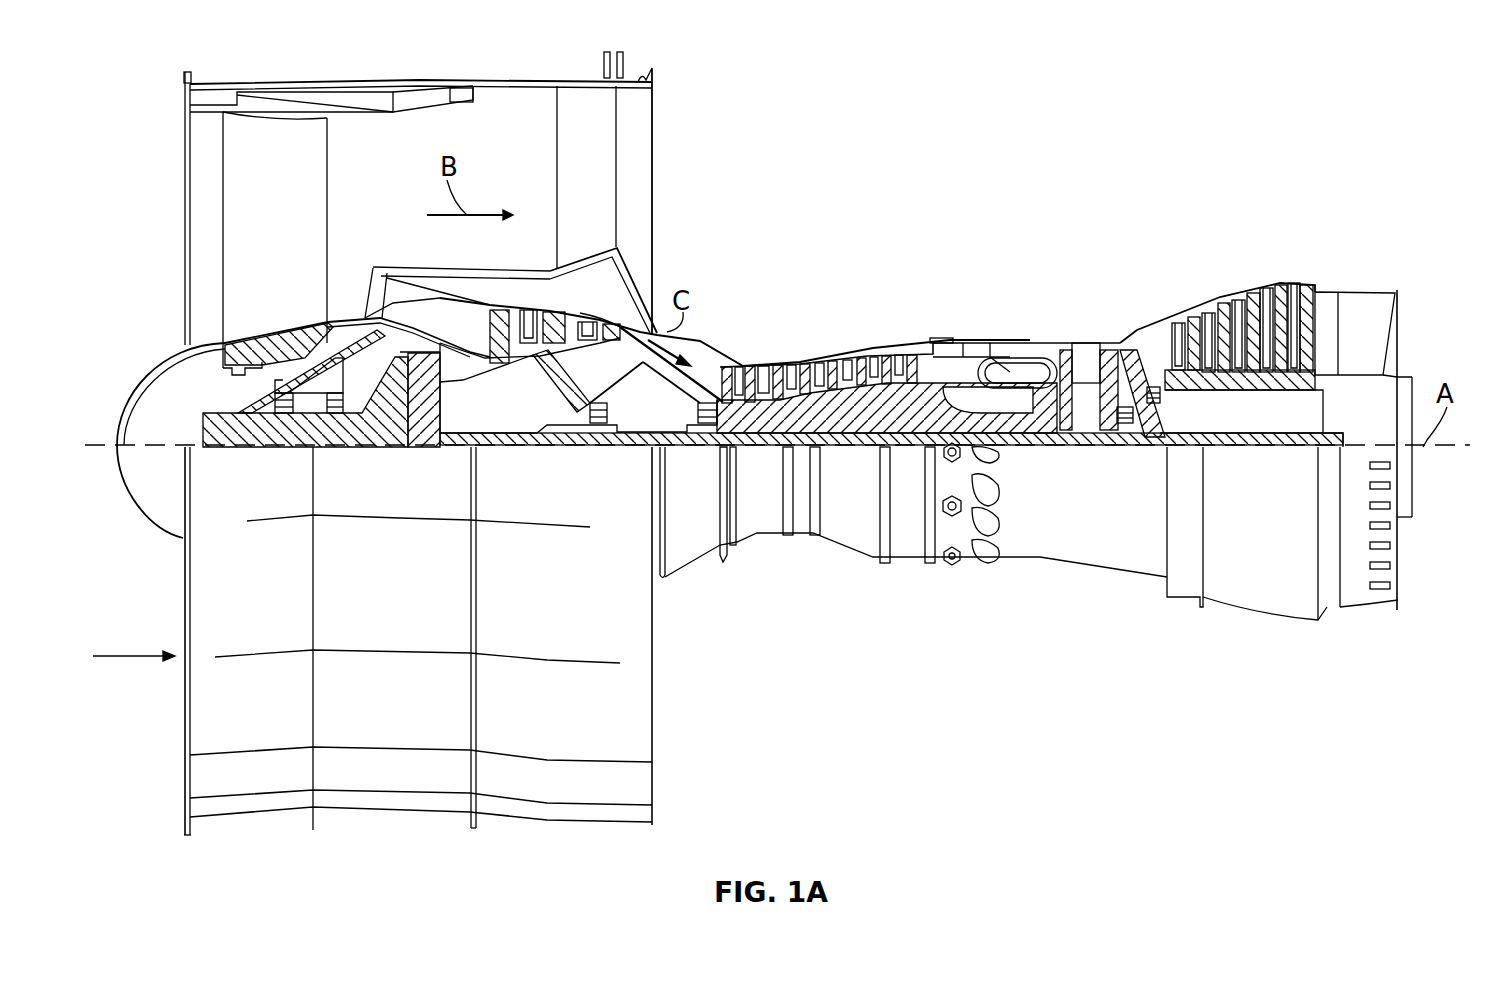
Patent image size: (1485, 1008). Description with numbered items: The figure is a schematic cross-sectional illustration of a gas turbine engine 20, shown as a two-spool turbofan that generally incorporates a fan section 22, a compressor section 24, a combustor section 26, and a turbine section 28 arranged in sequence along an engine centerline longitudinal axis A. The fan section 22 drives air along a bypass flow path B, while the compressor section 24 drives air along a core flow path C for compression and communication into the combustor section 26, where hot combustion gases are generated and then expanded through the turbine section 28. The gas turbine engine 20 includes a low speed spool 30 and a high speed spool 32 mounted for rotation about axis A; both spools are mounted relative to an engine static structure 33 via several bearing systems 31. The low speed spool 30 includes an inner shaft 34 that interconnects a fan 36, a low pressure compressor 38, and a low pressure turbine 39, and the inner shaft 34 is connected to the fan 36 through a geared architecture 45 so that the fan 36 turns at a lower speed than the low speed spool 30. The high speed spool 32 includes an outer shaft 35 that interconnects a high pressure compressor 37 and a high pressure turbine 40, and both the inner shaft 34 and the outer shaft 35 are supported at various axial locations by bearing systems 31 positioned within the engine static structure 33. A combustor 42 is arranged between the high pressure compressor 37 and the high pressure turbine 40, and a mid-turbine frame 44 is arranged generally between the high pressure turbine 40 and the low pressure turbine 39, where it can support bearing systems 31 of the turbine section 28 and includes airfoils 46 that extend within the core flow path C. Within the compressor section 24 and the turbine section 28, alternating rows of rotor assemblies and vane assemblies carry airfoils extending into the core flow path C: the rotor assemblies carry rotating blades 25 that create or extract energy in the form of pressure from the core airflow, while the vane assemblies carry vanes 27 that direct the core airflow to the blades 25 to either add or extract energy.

The gas turbine engine 20 is at (1232, 126).
The fan section 22 is at (293, 78).
The compressor section 24 is at (693, 339).
The rotating blades 25 is at (500, 318).
The combustor section 26 is at (969, 343).
The vanes 27 is at (527, 318).
The turbine section 28 is at (1244, 253).
The low speed spool 30 is at (867, 462).
The bearing systems 31 is at (293, 405).
The high speed spool 32 is at (893, 397).
The engine static structure 33 is at (903, 572).
The inner shaft 34 is at (683, 447).
The outer shaft 35 is at (1083, 435).
The fan 36 is at (288, 248).
The high pressure compressor 37 is at (830, 398).
The low pressure compressor 38 is at (565, 320).
The low pressure turbine 39 is at (1253, 297).
The high pressure turbine 40 is at (1087, 343).
The combustor 42 is at (1010, 372).
The mid-turbine frame 44 is at (1117, 340).
The geared architecture 45 is at (432, 427).
The airfoils 46 is at (1137, 363).